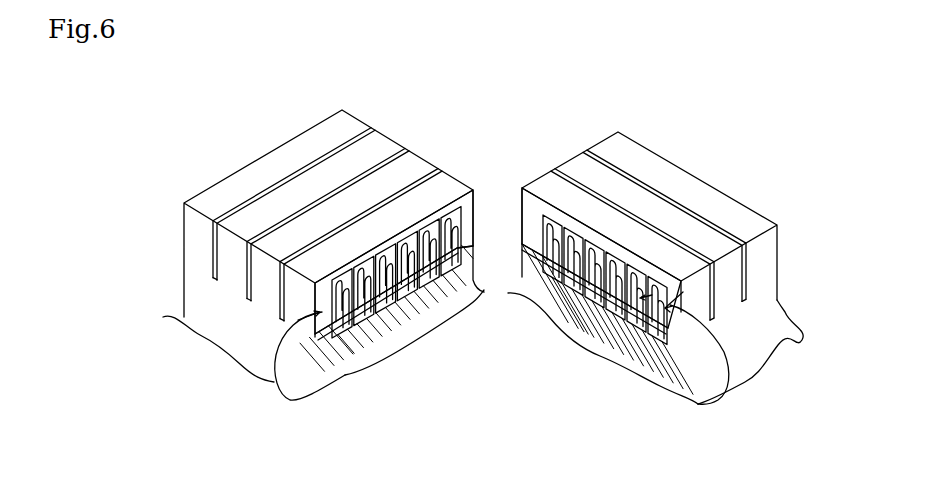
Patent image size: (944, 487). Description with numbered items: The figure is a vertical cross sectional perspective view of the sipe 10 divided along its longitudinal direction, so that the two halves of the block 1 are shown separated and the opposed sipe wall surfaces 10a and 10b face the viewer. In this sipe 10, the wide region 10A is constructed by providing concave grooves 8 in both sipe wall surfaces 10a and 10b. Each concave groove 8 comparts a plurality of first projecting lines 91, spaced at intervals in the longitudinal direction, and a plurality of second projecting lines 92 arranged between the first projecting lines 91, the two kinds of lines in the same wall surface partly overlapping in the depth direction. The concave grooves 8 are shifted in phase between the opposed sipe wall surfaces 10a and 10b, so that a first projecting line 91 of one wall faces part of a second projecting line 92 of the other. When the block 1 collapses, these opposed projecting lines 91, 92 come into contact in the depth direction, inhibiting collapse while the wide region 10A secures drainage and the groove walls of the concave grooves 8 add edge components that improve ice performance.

The block 1 is at (268, 154).
The concave groove 8 is at (400, 360).
The sipe 10 is at (333, 150).
The sipe wall surface 10a is at (457, 209).
The sipe wall surface 10b is at (528, 213).
The wide region 10A is at (276, 386).
The first projecting line 91 is at (392, 300).
The second projecting line 92 is at (423, 240).